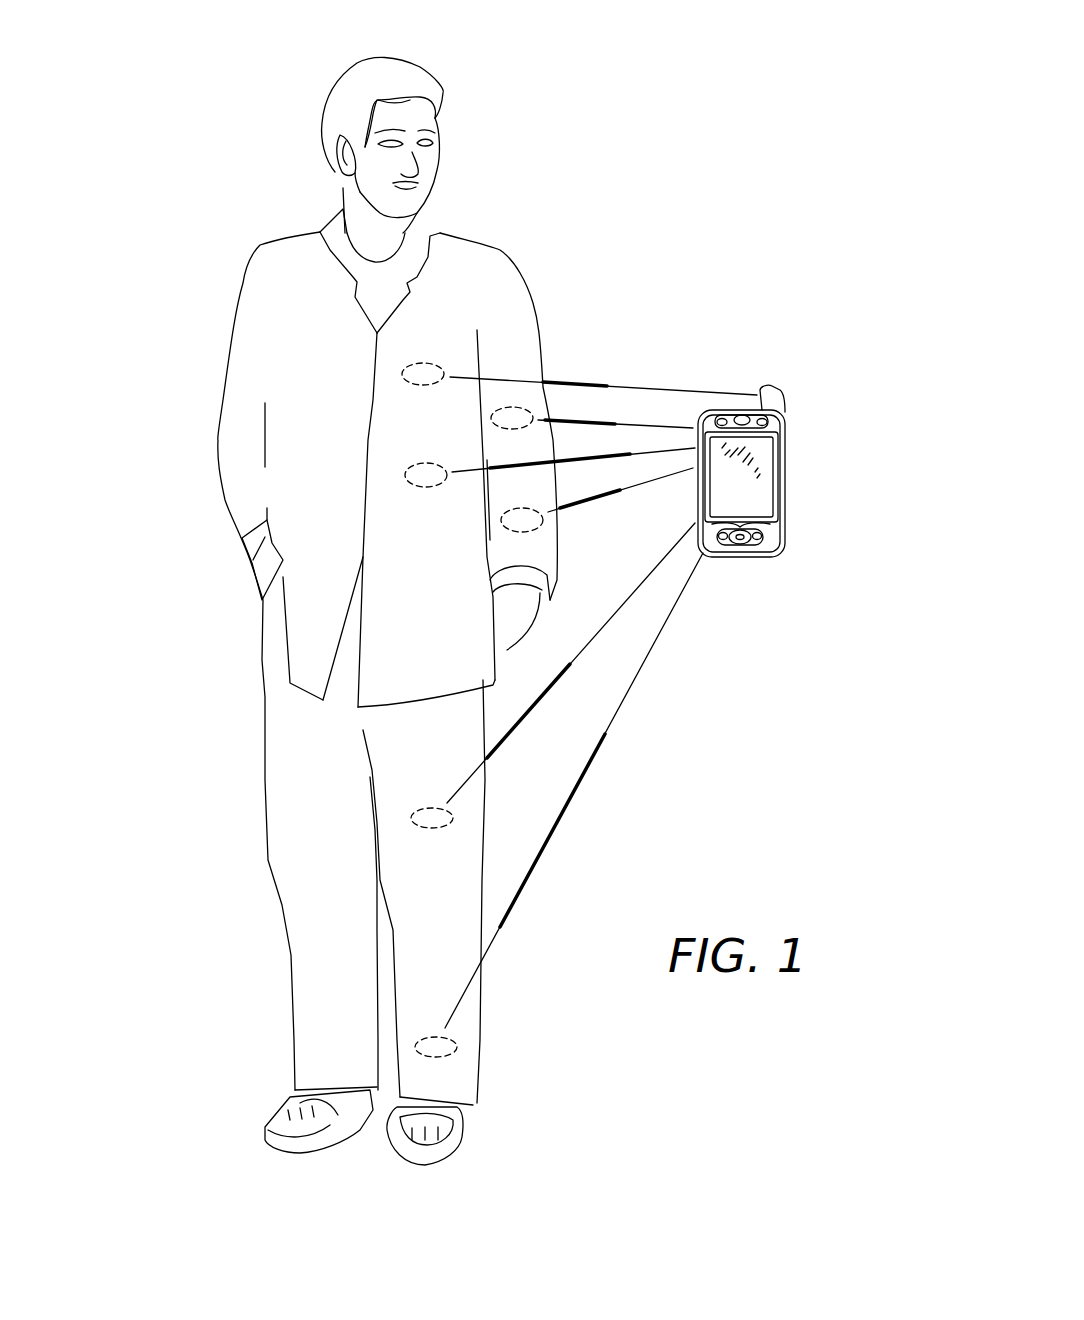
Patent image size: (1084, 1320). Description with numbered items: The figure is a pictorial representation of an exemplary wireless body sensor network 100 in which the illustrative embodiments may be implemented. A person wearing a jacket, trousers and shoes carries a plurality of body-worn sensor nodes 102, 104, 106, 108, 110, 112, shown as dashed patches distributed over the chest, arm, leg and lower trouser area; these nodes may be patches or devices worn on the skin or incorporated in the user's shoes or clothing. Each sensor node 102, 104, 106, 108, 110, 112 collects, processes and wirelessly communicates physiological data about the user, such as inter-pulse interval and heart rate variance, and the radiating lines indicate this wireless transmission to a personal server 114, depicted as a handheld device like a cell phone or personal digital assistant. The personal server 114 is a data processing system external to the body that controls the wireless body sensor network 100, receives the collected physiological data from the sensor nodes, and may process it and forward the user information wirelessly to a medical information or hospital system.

The wireless body sensor network 100 is at (633, 158).
The body-worn sensor node 102 is at (423, 363).
The body-worn sensor node 104 is at (487, 418).
The body-worn sensor node 106 is at (405, 473).
The body-worn sensor node 108 is at (500, 521).
The body-worn sensor node 110 is at (450, 827).
The body-worn sensor node 112 is at (457, 1045).
The personal server 114 is at (785, 470).